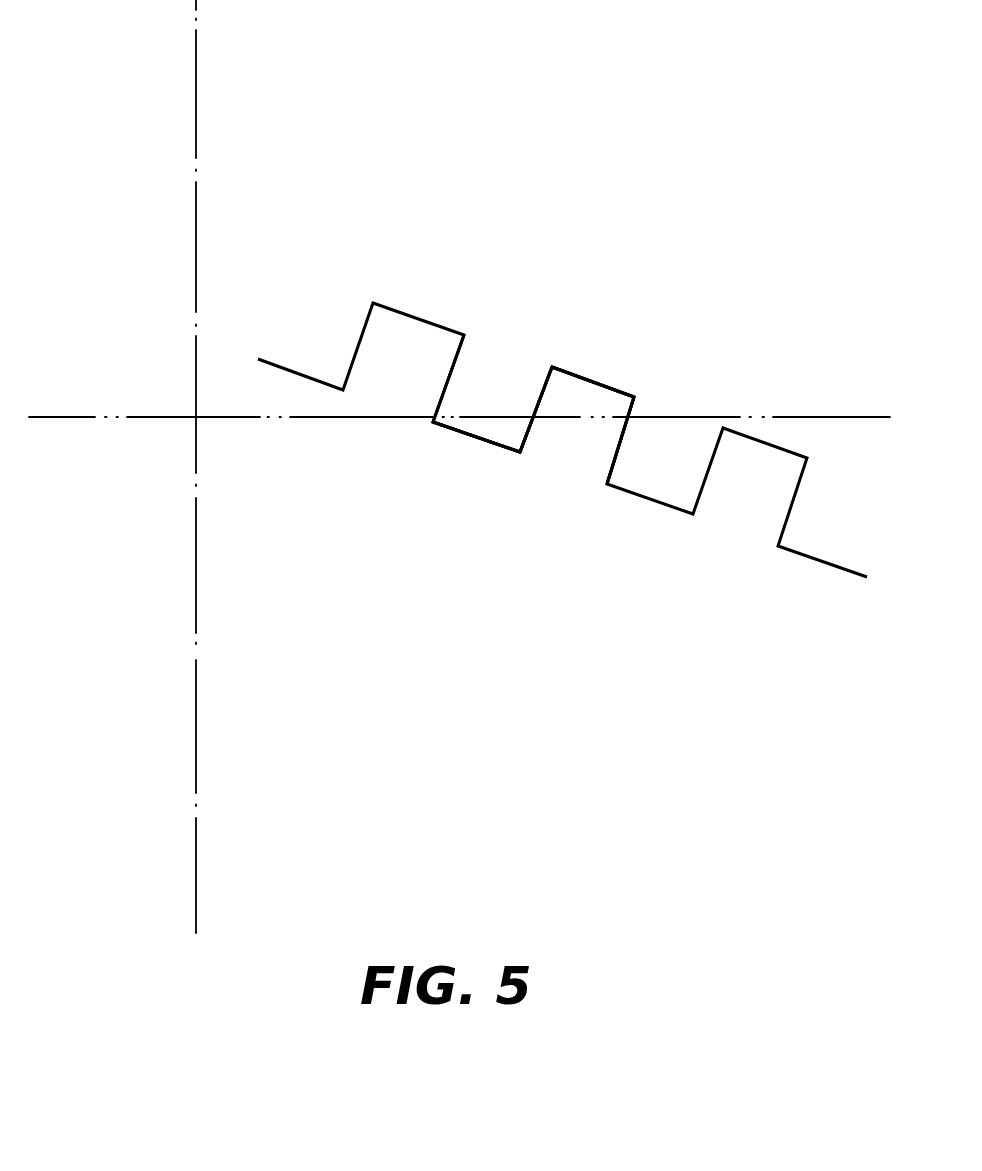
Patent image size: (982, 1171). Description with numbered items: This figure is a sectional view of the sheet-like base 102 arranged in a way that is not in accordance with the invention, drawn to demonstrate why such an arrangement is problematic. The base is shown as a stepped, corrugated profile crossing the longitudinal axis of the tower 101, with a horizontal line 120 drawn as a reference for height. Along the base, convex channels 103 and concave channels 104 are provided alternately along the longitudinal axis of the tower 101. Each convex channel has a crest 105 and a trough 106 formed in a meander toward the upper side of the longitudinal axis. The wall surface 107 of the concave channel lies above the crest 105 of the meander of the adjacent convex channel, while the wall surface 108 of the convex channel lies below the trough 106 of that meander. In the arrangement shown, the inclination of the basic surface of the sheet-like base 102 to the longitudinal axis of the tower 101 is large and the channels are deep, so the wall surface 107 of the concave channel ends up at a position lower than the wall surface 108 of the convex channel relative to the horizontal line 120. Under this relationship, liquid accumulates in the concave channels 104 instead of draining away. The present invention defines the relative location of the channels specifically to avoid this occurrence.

The longitudinal axis of the tower 101 is at (196, 42).
The sheet-like base 102 is at (272, 366).
The convex channel 103 is at (631, 390).
The concave channel 104 is at (455, 430).
The crest 105 is at (520, 454).
The trough 106 is at (552, 366).
The wall surface of the concave channel 107 is at (506, 438).
The wall surface of the convex channel 108 is at (616, 378).
The horizontal line 120 is at (853, 415).